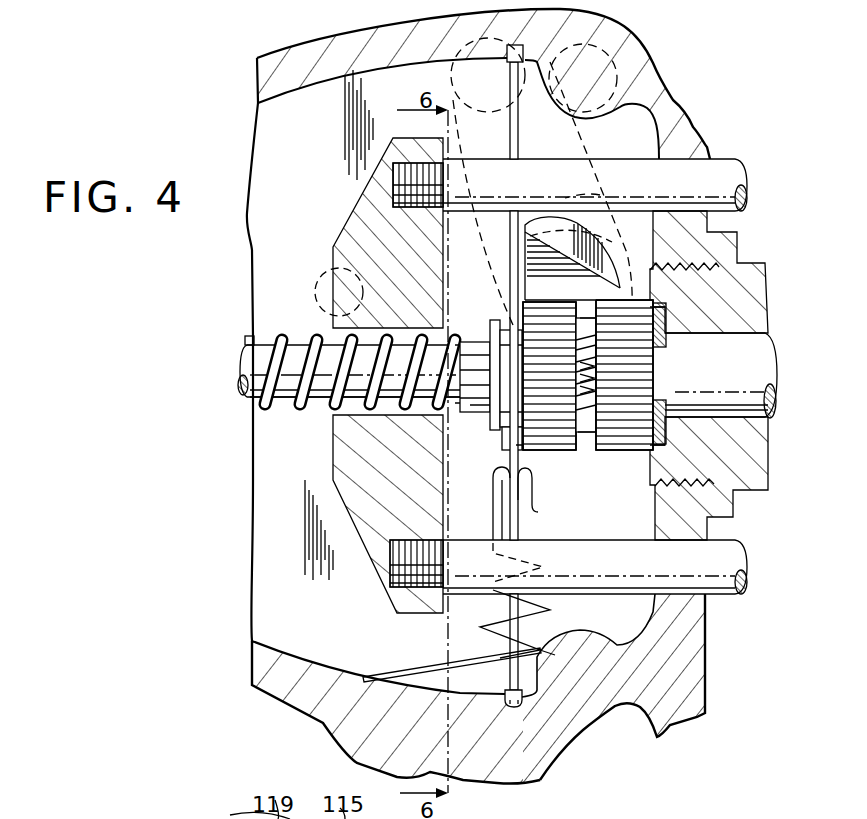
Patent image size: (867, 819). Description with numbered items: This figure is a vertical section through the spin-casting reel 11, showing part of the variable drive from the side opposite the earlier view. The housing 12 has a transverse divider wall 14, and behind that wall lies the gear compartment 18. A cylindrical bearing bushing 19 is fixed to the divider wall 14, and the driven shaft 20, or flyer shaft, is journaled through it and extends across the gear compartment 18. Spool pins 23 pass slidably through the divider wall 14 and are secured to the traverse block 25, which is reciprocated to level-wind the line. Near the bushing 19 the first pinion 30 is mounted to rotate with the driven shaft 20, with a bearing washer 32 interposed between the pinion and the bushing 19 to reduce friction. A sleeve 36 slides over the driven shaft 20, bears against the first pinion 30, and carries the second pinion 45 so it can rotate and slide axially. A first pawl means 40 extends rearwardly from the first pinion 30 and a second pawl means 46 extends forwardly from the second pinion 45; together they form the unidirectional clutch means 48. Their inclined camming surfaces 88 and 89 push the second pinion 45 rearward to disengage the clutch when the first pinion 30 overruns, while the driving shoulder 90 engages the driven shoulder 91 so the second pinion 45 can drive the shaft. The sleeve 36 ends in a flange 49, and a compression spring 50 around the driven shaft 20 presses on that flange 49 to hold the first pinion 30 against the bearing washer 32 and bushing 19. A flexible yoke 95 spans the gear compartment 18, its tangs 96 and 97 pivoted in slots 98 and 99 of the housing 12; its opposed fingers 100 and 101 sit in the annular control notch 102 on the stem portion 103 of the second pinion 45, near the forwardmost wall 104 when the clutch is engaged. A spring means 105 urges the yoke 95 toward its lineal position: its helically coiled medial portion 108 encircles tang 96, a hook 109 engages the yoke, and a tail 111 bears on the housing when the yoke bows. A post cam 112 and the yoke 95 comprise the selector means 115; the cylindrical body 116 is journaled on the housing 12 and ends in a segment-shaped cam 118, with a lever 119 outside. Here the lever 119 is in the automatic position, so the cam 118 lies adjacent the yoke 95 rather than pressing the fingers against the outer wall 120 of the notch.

The spin-casting reel 11 is at (243, 681).
The housing 12 is at (290, 48).
The transverse divider wall 14 is at (690, 617).
The gear compartment 18 is at (262, 588).
The bearing bushing 19 is at (768, 462).
The driven shaft 20 is at (780, 403).
The spool pins 23 is at (749, 198).
The traverse block 25 is at (347, 492).
The first pinion 30 is at (625, 453).
The bearing washer 32 is at (668, 348).
The sleeve 36 is at (487, 413).
The first pawl means 40 is at (668, 412).
The second pinion 45 is at (567, 452).
The second pawl means 46 is at (604, 366).
The unidirectional clutch means 48 is at (585, 455).
The flange 49 is at (462, 425).
The compression spring 50 is at (265, 425).
The inclined camming surface 88 is at (652, 430).
The inclined camming surface 89 is at (586, 330).
The driving shoulder 90 is at (604, 389).
The driven shoulder 91 is at (600, 375).
The flexible yoke 95 is at (503, 510).
The tang 96 is at (523, 692).
The tang 97 is at (528, 54).
The slot 98 is at (510, 707).
The slot 99 is at (523, 50).
The finger 100 is at (582, 430).
The finger 101 is at (520, 330).
The annular control notch 102 is at (502, 452).
The stem portion 103 is at (496, 328).
The forwardmost wall 104 is at (520, 447).
The spring means 105 is at (547, 611).
The helically coiled medial portion 108 is at (527, 655).
The hook 109 is at (530, 492).
The tail 111 is at (393, 672).
The post cam 112 is at (627, 250).
The selector means 115 is at (600, 147).
The cylindrical body 116 is at (560, 286).
The cam 118 is at (558, 238).
The lever 119 is at (600, 195).
The outer wall 120 is at (445, 322).